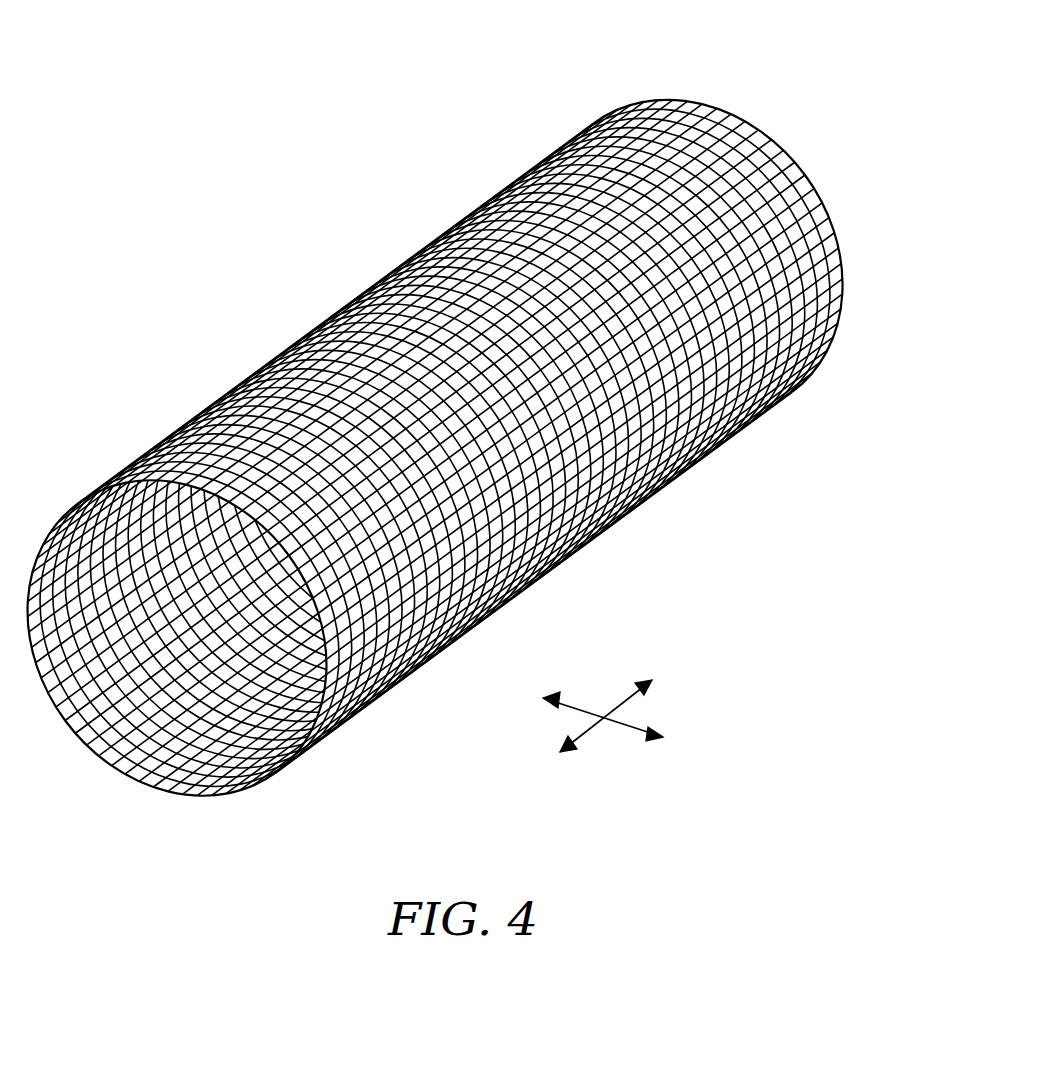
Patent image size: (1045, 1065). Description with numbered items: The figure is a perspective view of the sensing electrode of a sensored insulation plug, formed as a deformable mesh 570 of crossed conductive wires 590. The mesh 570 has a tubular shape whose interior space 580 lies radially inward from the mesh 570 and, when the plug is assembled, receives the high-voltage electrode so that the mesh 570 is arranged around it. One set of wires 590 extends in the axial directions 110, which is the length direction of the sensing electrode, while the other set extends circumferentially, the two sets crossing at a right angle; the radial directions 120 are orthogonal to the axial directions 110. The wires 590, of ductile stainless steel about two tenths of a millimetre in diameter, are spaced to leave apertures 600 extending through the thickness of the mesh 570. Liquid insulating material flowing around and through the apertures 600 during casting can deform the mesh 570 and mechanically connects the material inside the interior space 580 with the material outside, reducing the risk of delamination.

The deformable mesh 570 is at (473, 436).
The interior space 580 is at (156, 680).
The conductive wires 590 is at (788, 183).
The apertures 600 is at (752, 288).
The axial directions 110 is at (618, 708).
The radial directions 120 is at (618, 724).